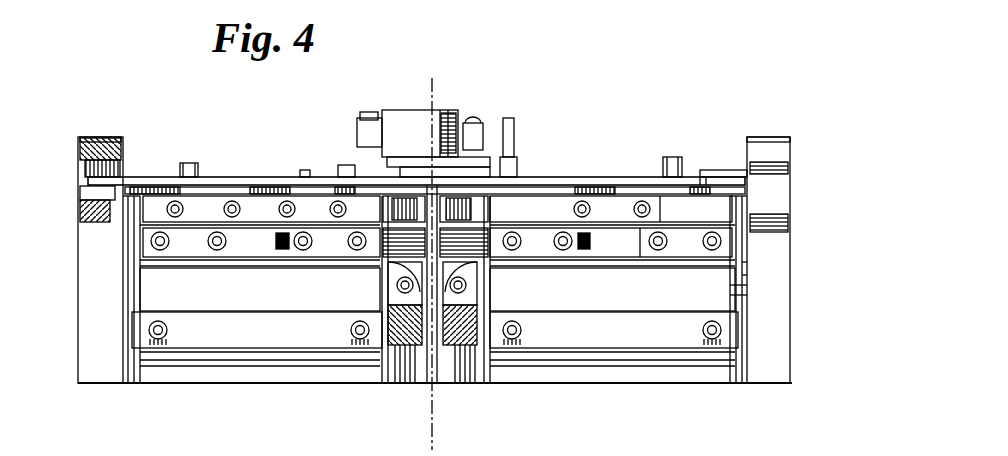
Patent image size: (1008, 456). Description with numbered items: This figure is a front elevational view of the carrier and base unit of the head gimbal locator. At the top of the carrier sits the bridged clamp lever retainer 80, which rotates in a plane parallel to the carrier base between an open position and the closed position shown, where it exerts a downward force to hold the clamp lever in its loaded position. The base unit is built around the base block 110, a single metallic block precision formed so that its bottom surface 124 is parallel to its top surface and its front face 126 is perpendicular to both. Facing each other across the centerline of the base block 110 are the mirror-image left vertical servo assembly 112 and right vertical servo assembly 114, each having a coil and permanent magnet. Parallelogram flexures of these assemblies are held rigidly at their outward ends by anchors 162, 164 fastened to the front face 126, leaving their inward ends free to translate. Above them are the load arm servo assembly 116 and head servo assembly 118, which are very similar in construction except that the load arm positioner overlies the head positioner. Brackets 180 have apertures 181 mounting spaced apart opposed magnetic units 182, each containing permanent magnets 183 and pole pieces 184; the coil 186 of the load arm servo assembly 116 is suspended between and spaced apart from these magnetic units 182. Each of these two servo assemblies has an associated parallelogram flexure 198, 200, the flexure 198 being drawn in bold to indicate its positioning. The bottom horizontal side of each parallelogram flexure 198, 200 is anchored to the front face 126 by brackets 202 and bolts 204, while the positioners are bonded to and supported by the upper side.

The clamp lever retainer 80 is at (405, 110).
The base block 110 is at (191, 370).
The left vertical servo assembly 112 is at (428, 350).
The right vertical servo assembly 114 is at (455, 345).
The load arm servo assembly 116 is at (587, 177).
The head servo assembly 118 is at (268, 177).
The bottom surface 124 is at (262, 383).
The front face 126 is at (663, 300).
The anchor 162 is at (165, 262).
The anchor 164 is at (757, 270).
The bracket 180 is at (117, 137).
The aperture 181 is at (82, 182).
The magnetic unit 182 is at (782, 160).
The permanent magnet 183 is at (82, 162).
The pole piece 184 is at (100, 143).
The coil 186 is at (722, 177).
The parallelogram flexure 198 is at (742, 290).
The parallelogram flexure 200 is at (130, 290).
The bracket 202 is at (306, 332).
The bolt 204 is at (360, 342).